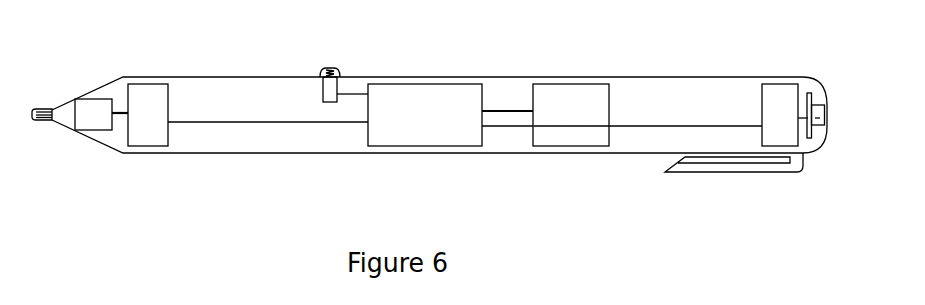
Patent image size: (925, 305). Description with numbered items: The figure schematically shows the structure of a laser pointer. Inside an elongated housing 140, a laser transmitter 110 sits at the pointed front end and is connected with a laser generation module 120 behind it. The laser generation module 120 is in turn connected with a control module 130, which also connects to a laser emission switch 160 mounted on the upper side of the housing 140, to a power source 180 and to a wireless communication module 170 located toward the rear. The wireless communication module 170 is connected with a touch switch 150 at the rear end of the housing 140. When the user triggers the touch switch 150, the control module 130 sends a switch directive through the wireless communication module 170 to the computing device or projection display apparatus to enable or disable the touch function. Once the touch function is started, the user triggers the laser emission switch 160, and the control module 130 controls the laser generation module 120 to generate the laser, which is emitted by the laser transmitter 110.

The laser transmitter 110 is at (91, 114).
The laser generation module 120 is at (148, 112).
The control module 130 is at (418, 115).
The housing 140 is at (645, 132).
The touch switch 150 is at (815, 117).
The laser emission switch 160 is at (330, 92).
The wireless communication module 170 is at (778, 110).
The power source 180 is at (568, 118).